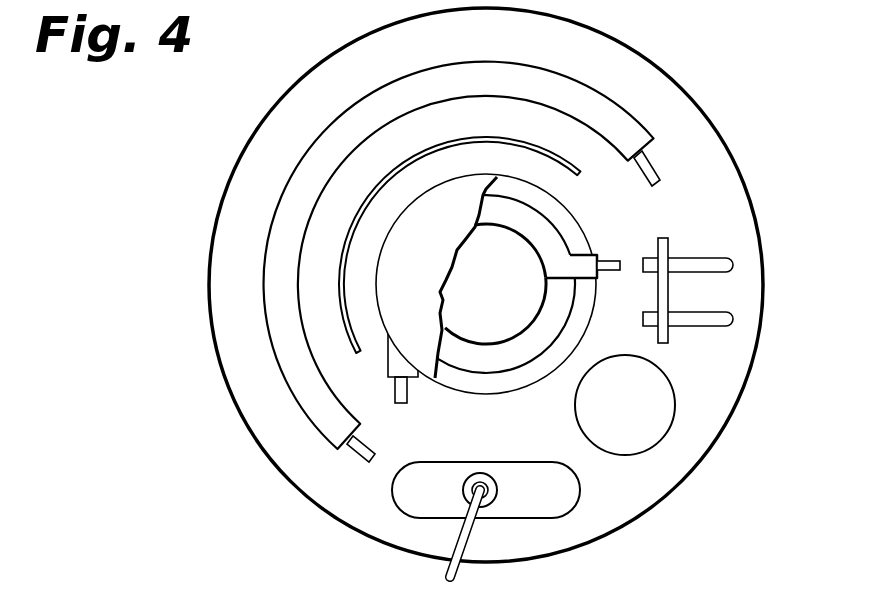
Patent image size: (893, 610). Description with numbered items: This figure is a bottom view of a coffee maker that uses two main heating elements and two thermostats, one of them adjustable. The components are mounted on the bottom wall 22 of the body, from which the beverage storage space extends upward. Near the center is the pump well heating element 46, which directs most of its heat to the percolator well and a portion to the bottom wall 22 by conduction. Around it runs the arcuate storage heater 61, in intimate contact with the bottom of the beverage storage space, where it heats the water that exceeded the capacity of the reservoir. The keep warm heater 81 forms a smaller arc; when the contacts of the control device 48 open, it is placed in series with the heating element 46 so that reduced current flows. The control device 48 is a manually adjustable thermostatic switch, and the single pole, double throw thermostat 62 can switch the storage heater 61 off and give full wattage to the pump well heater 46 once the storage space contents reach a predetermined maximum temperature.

The bottom wall 22 is at (733, 357).
The heating element 46 is at (570, 240).
The control device 48 is at (662, 440).
The storage heater 61 is at (310, 422).
The thermostat 62 is at (553, 518).
The keep warm heater 81 is at (505, 140).